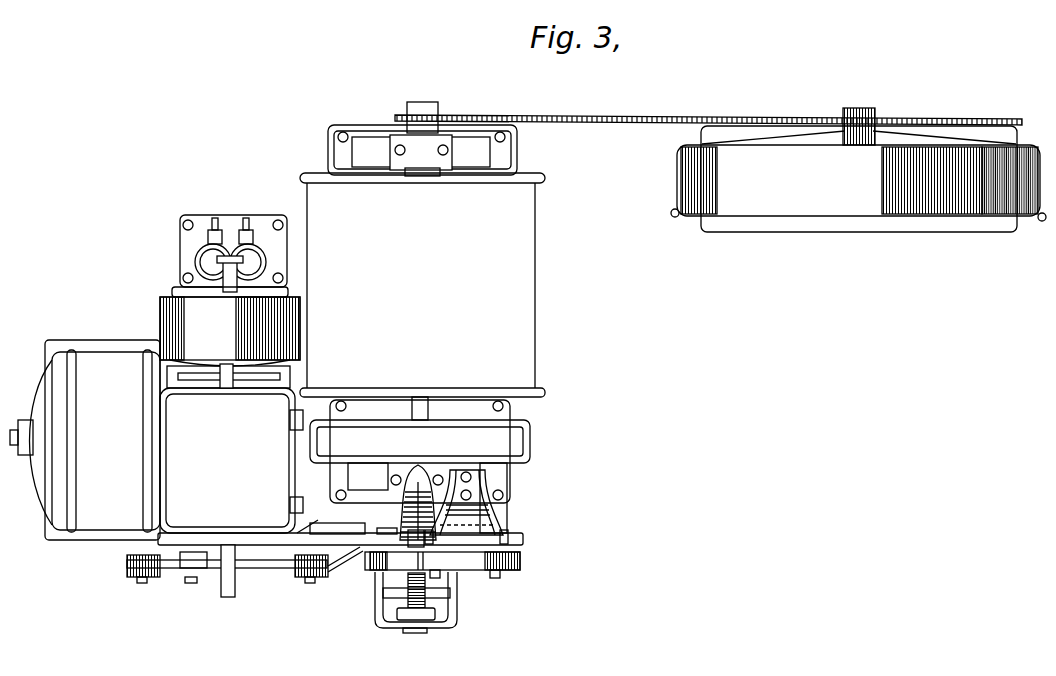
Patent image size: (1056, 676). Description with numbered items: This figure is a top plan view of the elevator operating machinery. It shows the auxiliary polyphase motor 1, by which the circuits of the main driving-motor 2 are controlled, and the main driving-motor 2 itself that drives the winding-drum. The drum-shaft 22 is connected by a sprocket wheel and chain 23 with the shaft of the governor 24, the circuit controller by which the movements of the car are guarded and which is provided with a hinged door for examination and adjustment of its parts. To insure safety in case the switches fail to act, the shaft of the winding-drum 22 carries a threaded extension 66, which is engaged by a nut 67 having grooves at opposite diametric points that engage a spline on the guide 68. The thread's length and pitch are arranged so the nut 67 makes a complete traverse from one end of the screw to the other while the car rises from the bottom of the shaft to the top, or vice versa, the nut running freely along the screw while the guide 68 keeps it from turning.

The polyphase motor 1 is at (230, 337).
The main driving-motor 2 is at (85, 440).
The drum-shaft 22 is at (421, 104).
The sprocket wheel and chain 23 is at (682, 104).
The governor 24 is at (858, 170).
The threaded extension 66 is at (427, 603).
The nut 67 is at (383, 591).
The guide 68 is at (398, 624).